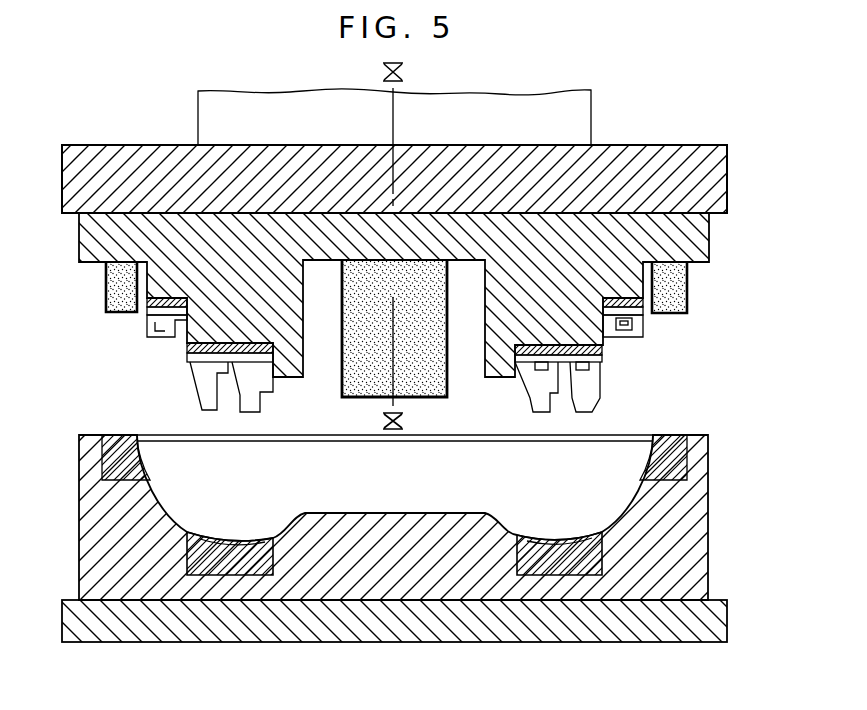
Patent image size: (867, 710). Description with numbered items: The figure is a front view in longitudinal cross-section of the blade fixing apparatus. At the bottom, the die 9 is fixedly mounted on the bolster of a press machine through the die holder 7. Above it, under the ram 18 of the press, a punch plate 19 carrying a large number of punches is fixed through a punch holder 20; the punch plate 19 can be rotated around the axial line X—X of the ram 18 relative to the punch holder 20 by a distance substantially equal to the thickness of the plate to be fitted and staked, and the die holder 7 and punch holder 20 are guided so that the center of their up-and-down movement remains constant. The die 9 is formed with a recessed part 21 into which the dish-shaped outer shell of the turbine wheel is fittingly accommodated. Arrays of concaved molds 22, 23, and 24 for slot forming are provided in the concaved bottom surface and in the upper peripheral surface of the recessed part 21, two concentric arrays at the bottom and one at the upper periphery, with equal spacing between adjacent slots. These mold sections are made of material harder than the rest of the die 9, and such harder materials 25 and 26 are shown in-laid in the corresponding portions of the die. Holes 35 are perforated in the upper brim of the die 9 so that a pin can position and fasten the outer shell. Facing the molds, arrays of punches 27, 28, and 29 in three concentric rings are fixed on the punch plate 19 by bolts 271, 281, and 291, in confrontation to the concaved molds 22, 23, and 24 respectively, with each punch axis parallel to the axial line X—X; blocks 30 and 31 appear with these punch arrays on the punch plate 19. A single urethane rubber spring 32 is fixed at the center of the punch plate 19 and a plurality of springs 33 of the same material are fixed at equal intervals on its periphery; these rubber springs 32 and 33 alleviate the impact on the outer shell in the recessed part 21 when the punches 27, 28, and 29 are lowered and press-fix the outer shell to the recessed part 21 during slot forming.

The die holder 7 is at (722, 606).
The die 9 is at (712, 517).
The ram 18 is at (593, 105).
The punch plate 19 is at (710, 240).
The punch holder 20 is at (712, 168).
The recessed part 21 is at (378, 512).
The concaved mold 22 is at (253, 540).
The concaved mold 23 is at (215, 540).
The concaved mold 24 is at (140, 452).
The material of higher hardness 25 is at (228, 565).
The material of higher hardness 26 is at (102, 458).
The punch 27 is at (254, 405).
The bolt 271 is at (530, 402).
The punch 28 is at (210, 393).
The bolt 281 is at (598, 378).
The punch 29 is at (152, 323).
The bolt 291 is at (623, 331).
The spacer strip 30 is at (195, 358).
The mounting block 31 is at (147, 317).
The spring 32 is at (342, 362).
The spring 33 is at (106, 285).
The hole 35 is at (118, 437).